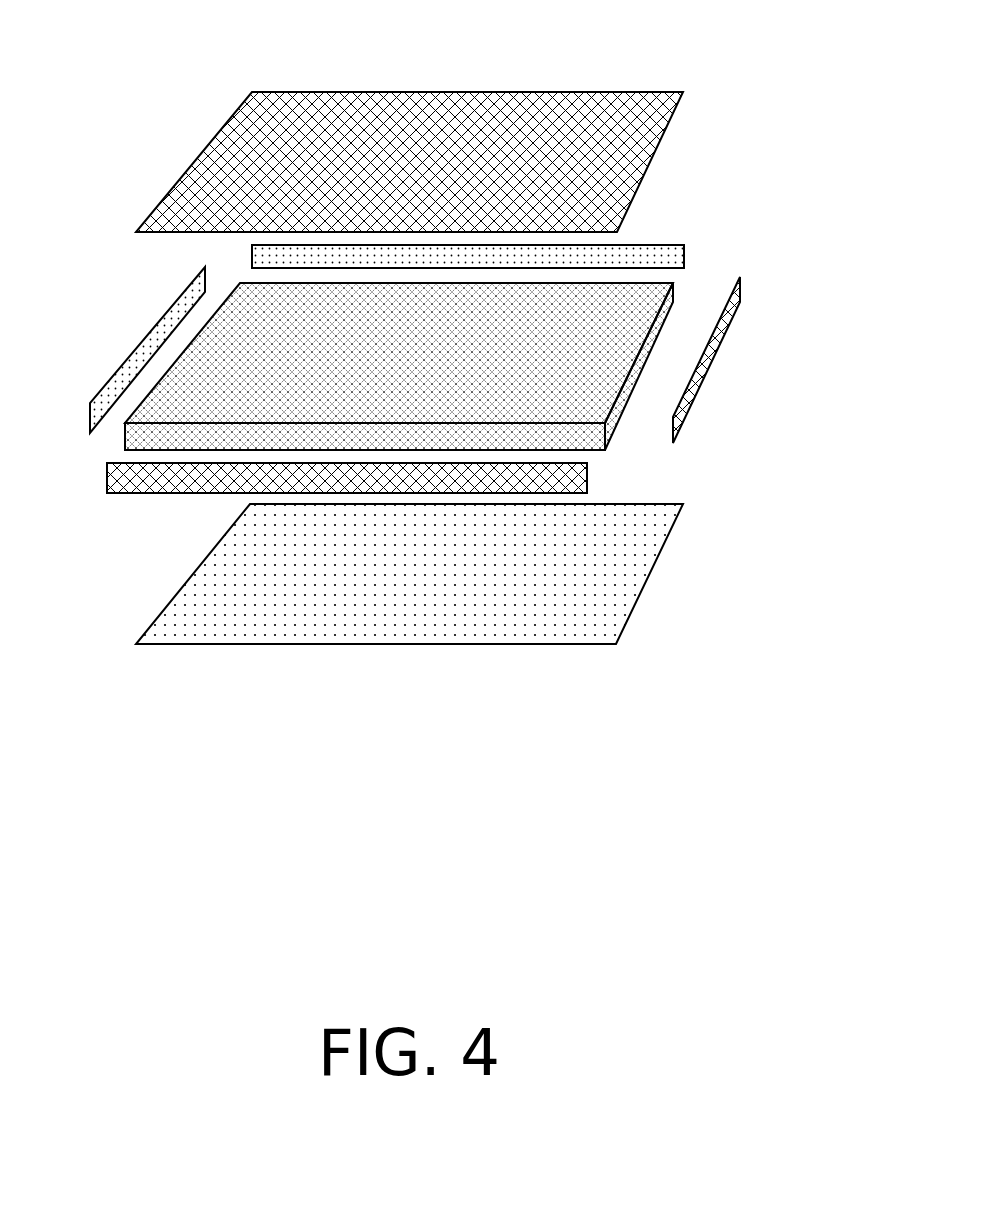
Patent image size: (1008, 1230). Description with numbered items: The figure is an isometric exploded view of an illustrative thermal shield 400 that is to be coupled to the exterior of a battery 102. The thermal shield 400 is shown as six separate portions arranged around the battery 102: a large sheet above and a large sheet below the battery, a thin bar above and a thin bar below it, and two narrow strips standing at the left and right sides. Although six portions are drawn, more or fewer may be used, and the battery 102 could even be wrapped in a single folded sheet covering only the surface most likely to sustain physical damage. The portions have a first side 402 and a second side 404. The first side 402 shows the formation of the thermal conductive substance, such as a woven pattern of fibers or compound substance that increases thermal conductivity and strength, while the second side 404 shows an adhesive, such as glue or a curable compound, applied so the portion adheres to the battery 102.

The thermal shield 400 is at (695, 40).
The battery 102 is at (675, 300).
The first side 402 is at (538, 135).
The second side 404 is at (502, 600).